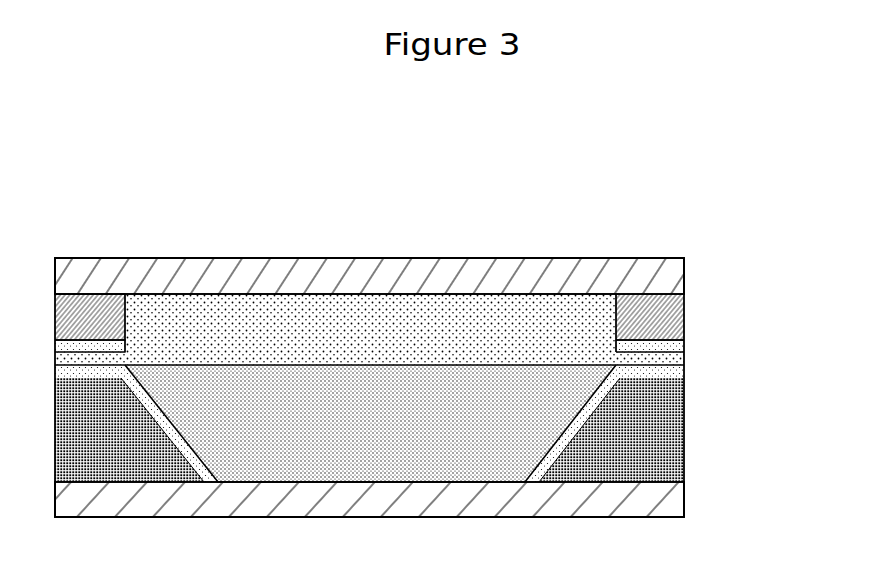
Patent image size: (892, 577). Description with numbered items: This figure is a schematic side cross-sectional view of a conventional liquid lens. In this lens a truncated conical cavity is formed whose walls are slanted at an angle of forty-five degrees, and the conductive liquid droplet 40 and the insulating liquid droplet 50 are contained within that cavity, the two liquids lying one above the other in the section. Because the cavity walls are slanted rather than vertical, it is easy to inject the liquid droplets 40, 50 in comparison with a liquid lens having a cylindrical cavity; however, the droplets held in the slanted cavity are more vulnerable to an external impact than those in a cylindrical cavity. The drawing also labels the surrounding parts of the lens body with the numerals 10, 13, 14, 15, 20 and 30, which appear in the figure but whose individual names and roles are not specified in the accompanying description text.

The electrode substrate stack 10 is at (807, 320).
The electrode 13 is at (675, 316).
The insulating layer 14 is at (675, 371).
The partition wall 15 is at (675, 430).
The lower substrate 20 is at (675, 498).
The upper substrate 30 is at (569, 277).
The conductive liquid droplet 40 is at (263, 330).
The insulating liquid droplet 50 is at (383, 413).